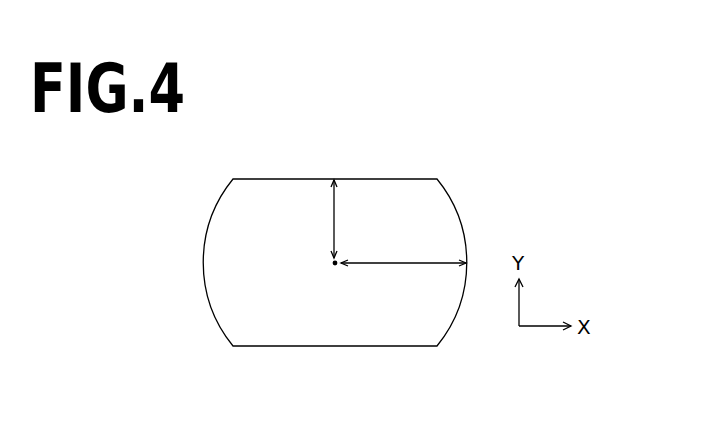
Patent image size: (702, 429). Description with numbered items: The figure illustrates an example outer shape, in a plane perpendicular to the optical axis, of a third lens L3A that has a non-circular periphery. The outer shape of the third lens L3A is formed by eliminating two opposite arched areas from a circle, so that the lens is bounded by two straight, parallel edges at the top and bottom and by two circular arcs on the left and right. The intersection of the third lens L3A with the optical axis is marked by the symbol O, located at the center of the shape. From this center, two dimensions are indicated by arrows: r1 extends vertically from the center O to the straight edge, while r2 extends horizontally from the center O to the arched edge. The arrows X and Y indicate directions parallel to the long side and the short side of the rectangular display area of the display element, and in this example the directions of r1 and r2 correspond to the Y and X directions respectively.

The third lens L3A is at (426, 153).
The intersection of the third lens and the optical axis O is at (323, 272).
The r1 of the third lens r1 is at (323, 219).
The r2 of the third lens r2 is at (403, 275).